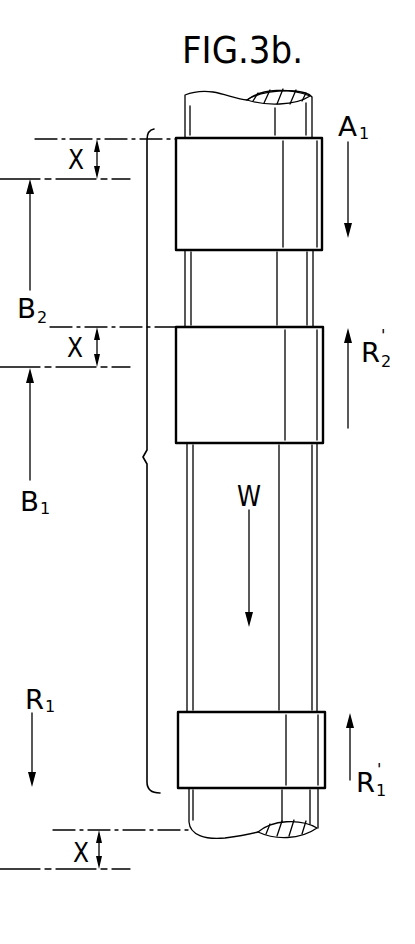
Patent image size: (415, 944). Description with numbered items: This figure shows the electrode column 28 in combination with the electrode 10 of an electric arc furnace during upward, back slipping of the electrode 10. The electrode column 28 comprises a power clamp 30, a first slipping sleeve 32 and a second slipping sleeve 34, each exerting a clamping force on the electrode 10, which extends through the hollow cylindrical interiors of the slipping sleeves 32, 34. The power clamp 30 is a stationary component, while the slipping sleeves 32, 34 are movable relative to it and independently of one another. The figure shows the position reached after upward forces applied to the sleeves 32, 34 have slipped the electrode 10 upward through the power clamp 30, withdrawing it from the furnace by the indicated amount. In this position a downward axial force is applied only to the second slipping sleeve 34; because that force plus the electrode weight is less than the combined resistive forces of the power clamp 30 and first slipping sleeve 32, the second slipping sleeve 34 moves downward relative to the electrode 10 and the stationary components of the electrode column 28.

The electrode 10 is at (200, 108).
The electrode column 28 is at (135, 461).
The power clamp 30 is at (266, 766).
The first slipping sleeve 32 is at (261, 401).
The second slipping sleeve 34 is at (277, 204).